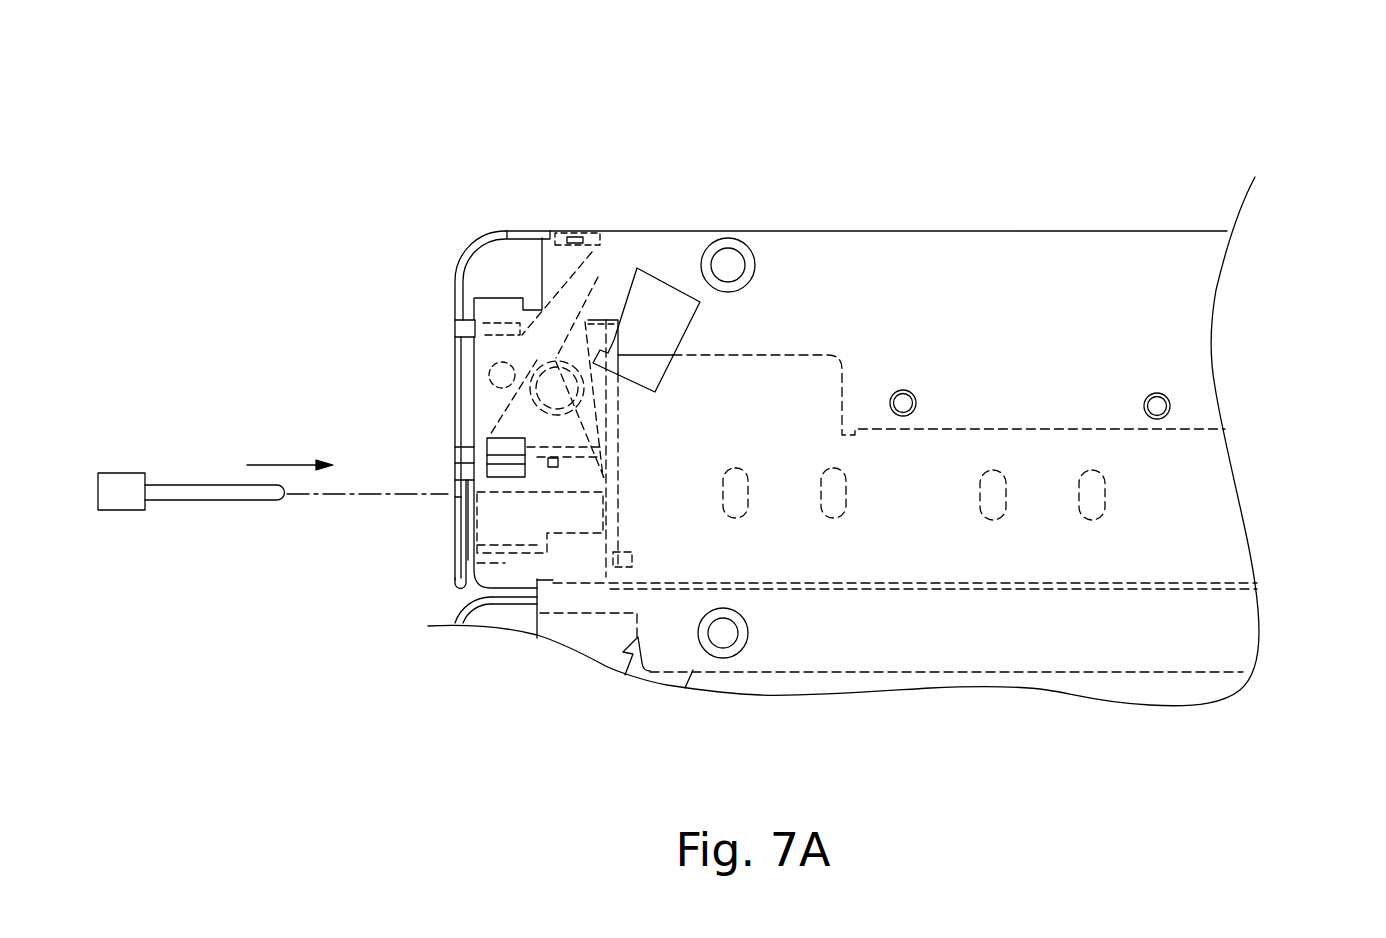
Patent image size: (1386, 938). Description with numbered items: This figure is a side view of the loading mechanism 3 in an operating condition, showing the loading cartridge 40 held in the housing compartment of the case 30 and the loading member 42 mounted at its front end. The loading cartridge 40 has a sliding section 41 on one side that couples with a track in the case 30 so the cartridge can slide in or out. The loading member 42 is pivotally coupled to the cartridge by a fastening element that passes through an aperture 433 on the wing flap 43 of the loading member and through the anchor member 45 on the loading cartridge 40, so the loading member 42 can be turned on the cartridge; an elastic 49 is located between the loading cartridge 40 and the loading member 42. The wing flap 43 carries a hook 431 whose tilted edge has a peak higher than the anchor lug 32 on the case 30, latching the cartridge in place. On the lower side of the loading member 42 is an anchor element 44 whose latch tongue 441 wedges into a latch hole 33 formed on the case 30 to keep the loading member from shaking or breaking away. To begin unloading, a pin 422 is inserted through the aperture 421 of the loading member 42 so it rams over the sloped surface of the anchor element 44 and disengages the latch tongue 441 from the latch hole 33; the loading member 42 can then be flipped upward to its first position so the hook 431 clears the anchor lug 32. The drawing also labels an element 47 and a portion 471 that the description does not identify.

The loading mechanism 3 is at (1303, 104).
The case 30 is at (841, 230).
The anchor lug 32 is at (492, 297).
The latch hole 33 is at (523, 472).
The loading cartridge 40 is at (843, 388).
The sliding section 41 is at (997, 430).
The loading member 42 is at (455, 268).
The aperture 421 is at (453, 502).
The pin 422 is at (112, 482).
The wing flap 43 is at (460, 376).
The hook 431 is at (518, 333).
The aperture 433 is at (483, 373).
The anchor element 44 is at (457, 520).
The latch tongue 441 is at (503, 460).
The anchor member 45 is at (597, 322).
The latch 47 is at (533, 227).
The tab 471 is at (580, 233).
The elastic 49 is at (580, 416).